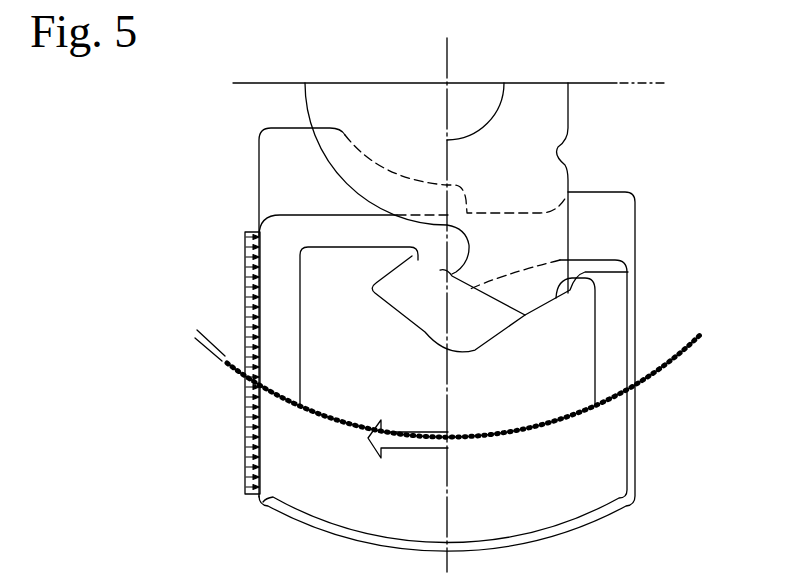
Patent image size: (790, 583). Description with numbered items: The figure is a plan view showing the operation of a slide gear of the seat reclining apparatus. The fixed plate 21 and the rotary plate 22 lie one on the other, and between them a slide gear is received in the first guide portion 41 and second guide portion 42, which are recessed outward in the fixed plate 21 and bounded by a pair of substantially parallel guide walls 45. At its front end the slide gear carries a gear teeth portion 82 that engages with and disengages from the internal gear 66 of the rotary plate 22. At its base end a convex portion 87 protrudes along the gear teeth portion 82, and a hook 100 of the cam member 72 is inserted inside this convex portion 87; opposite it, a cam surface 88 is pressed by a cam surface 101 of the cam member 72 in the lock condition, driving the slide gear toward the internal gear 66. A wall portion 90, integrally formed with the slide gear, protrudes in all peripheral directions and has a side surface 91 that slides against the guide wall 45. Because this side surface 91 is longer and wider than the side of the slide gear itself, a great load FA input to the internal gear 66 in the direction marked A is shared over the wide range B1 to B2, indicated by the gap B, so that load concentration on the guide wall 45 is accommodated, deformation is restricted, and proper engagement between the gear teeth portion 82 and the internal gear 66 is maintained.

The cam member 72 is at (518, 97).
The hook 100 is at (440, 266).
The first guide portion 41 is at (459, 317).
The second guide portion 42 is at (588, 204).
The guide wall 45 is at (258, 172).
The cam surface 88 is at (628, 272).
The cam surface 101 is at (542, 304).
The wall portion 90 is at (603, 447).
The convex portion 87 is at (416, 263).
The side surface 91 is at (245, 244).
The internal gear 66 is at (337, 424).
The gear teeth portion 82 is at (503, 440).
The load FA is at (408, 434).
The direction A is at (462, 423).
The gap B is at (261, 188).
The end of load-sharing range B1 is at (260, 239).
The end of load-sharing range B2 is at (262, 492).
The fixed plate 21 is at (206, 303).
The rotary plate 22 is at (206, 443).